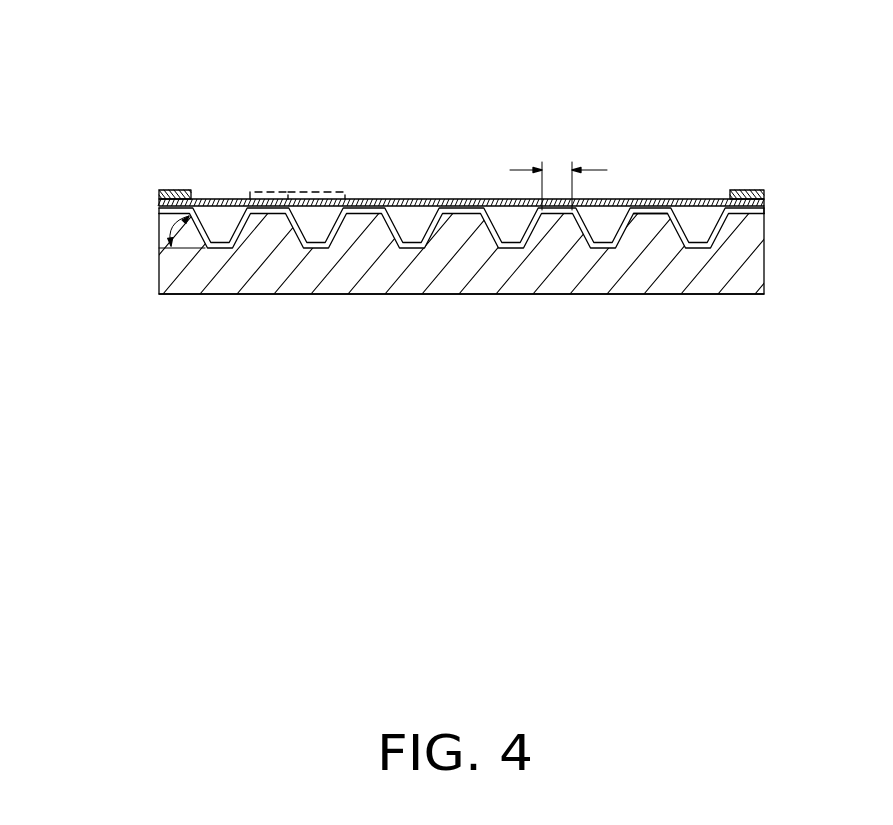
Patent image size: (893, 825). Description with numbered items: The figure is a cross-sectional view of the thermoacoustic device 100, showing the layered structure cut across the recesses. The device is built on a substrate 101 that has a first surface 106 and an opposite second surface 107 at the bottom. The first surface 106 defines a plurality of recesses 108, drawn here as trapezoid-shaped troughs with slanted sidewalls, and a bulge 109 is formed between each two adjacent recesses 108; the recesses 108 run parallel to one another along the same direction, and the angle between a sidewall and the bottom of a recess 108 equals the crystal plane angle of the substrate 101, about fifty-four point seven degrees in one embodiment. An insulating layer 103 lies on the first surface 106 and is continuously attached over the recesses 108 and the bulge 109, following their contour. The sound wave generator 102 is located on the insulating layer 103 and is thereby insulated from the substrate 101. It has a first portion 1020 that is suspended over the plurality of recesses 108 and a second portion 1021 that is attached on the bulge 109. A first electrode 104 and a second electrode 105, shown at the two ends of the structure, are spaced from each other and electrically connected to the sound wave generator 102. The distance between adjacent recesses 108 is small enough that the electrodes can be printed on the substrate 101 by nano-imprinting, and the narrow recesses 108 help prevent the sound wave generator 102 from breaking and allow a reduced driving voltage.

The thermoacoustic device 100 is at (524, 81).
The substrate 101 is at (748, 243).
The sound wave generator 102 is at (490, 200).
The insulating layer 103 is at (160, 212).
The first electrode 104 is at (175, 190).
The second electrode 105 is at (755, 190).
The first surface 106 is at (770, 207).
The second surface 107 is at (746, 302).
The recess 108 is at (607, 218).
The bulge 109 is at (657, 220).
The first portion 1020 is at (328, 192).
The second portion 1021 is at (268, 192).